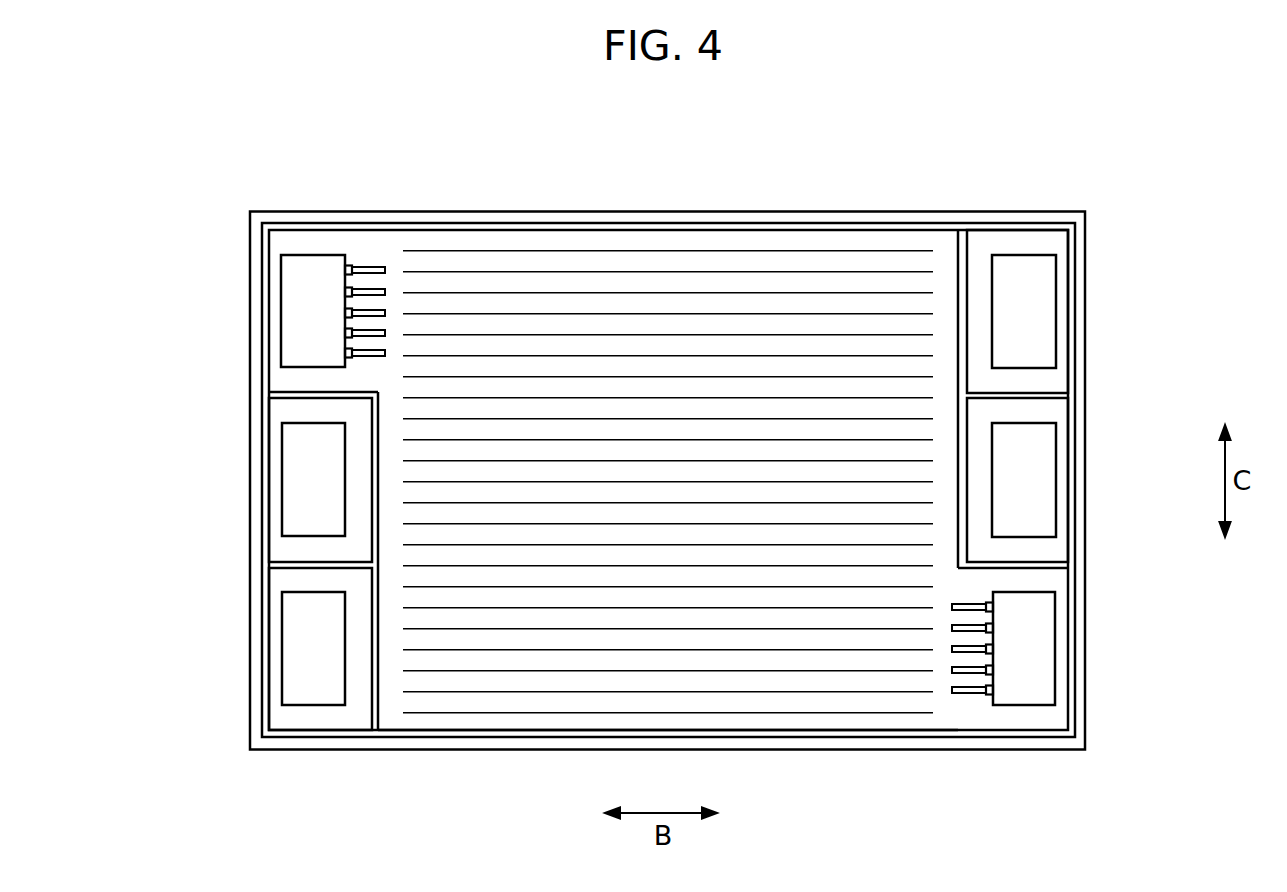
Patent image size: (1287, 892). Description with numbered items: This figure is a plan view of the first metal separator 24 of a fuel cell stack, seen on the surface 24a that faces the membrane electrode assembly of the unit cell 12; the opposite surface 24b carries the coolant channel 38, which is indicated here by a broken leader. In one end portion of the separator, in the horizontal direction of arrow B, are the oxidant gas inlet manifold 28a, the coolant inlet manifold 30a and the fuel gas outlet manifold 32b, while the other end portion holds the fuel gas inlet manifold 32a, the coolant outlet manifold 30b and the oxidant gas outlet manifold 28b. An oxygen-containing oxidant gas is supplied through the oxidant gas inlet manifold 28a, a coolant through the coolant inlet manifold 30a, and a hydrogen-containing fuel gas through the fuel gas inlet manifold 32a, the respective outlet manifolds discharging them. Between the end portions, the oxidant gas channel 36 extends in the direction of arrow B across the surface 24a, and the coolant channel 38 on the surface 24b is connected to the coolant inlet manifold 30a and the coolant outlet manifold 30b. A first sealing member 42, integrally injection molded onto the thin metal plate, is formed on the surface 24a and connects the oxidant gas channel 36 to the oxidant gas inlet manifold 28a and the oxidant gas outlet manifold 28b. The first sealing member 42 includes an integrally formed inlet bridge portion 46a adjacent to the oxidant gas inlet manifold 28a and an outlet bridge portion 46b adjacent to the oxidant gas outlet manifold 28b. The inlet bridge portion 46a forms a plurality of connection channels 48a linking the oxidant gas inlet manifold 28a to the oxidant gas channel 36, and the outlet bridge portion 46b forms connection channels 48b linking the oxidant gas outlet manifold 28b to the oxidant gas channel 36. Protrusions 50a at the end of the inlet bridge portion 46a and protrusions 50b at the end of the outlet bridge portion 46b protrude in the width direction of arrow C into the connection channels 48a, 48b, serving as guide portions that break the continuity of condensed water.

The unit cell 12 is at (702, 113).
The first metal separator 24 is at (667, 415).
The surface 24a is at (753, 720).
The surface 24b is at (805, 720).
The oxidant gas inlet manifold 28a is at (292, 272).
The oxidant gas outlet manifold 28b is at (1030, 607).
The coolant inlet manifold 30a is at (292, 452).
The coolant outlet manifold 30b is at (1030, 452).
The fuel gas inlet manifold 32a is at (1030, 271).
The fuel gas outlet manifold 32b is at (292, 627).
The oxidant gas channel 36 is at (523, 660).
The coolant channel 38 is at (590, 660).
The first sealing member 42 is at (815, 228).
The inlet bridge portion 46a is at (410, 270).
The outlet bridge portion 46b is at (935, 685).
The connection channels 48a is at (370, 280).
The connection channels 48b is at (968, 680).
The protrusions 50a is at (349, 264).
The protrusions 50b is at (988, 700).